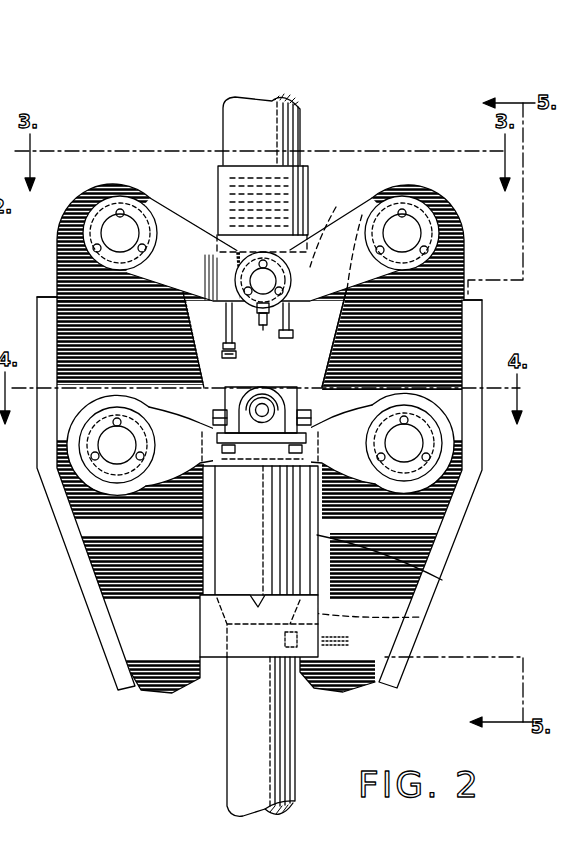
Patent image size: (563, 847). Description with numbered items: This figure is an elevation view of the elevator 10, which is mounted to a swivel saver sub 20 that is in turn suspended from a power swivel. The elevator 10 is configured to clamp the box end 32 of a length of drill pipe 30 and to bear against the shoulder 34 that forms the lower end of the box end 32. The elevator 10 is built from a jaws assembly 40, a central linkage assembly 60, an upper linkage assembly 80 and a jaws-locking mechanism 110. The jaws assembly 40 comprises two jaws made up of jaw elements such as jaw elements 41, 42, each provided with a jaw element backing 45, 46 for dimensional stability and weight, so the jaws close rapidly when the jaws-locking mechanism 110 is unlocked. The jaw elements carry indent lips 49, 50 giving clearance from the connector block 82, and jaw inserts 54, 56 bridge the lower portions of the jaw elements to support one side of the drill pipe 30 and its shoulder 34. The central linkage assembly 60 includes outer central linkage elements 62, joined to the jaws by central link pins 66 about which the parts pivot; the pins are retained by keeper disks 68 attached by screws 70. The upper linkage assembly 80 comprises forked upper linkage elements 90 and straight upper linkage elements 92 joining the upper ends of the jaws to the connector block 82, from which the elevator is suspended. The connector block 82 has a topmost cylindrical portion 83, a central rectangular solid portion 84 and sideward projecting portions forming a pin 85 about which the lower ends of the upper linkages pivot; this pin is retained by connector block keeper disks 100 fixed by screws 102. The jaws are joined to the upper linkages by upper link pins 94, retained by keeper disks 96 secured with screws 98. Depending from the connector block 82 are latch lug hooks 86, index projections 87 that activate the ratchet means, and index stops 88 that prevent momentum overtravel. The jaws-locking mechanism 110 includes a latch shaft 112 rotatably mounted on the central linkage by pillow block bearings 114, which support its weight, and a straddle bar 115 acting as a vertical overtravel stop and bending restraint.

The elevator 10 is at (123, 699).
The swivel saver sub 20 is at (222, 122).
The drill pipe 30 is at (282, 787).
The box end 32 is at (390, 563).
The shoulder 34 is at (420, 617).
The jaws assembly 40 is at (268, 682).
The jaw element 41 is at (132, 632).
The jaw element 42 is at (408, 660).
The jaw element backing 45 is at (88, 585).
The jaw element backing 46 is at (423, 600).
The indent lip 49 is at (180, 330).
The indent lip 50 is at (333, 352).
The jaw insert 54 is at (243, 648).
The jaw insert 56 is at (320, 657).
The central linkage assembly 60 is at (282, 542).
The outer central linkage element 62 is at (190, 437).
The central link pin 66 is at (115, 457).
The keeper disk 68 is at (78, 453).
The screw 70 is at (430, 428).
The upper linkage assembly 80 is at (259, 254).
The connector block 82 is at (329, 227).
The topmost cylindrical portion 83 is at (310, 180).
The central rectangular solid portion 84 is at (314, 290).
The pin 85 is at (226, 319).
The latch lug hook 86 is at (260, 326).
The index projection 87 is at (224, 355).
The index stop 88 is at (293, 331).
The forked upper linkage element 90 is at (173, 223).
The straight upper linkage element 92 is at (358, 200).
The upper link pin 94 is at (118, 234).
The keeper disk 96 is at (93, 233).
The screw 98 is at (94, 249).
The connector block keeper disk 100 is at (234, 278).
The screw 102 is at (300, 275).
The jaws-locking mechanism 110 is at (283, 420).
The latch shaft 112 is at (262, 417).
The pillow block bearing 114 is at (300, 432).
The straddle bar 115 is at (285, 390).